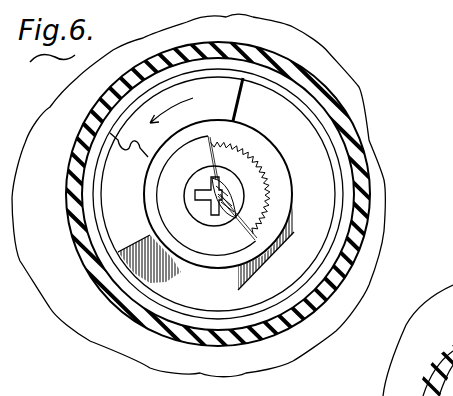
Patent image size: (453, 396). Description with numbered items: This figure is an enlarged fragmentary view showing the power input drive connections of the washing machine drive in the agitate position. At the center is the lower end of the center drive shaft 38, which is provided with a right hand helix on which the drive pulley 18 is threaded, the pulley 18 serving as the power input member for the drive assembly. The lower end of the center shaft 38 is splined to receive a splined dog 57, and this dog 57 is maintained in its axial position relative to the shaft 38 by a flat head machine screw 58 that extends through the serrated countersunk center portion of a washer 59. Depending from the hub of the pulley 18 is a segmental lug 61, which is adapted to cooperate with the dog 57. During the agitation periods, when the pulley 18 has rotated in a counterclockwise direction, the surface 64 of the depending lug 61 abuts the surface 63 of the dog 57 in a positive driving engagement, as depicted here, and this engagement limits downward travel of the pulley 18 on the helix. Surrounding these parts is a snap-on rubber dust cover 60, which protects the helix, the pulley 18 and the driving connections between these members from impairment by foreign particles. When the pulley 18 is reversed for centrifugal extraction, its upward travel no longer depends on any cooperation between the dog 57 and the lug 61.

The drive pulley 18 is at (371, 142).
The snap-on rubber dust cover 60 is at (329, 93).
The segmental lug 61 is at (232, 78).
The splined dog 57 is at (256, 136).
The washer 59 is at (207, 251).
The center drive shaft 38 is at (256, 187).
The flat head machine screw 58 is at (198, 213).
The surface of dog 63 is at (128, 160).
The surface of depending lug 64 is at (157, 116).